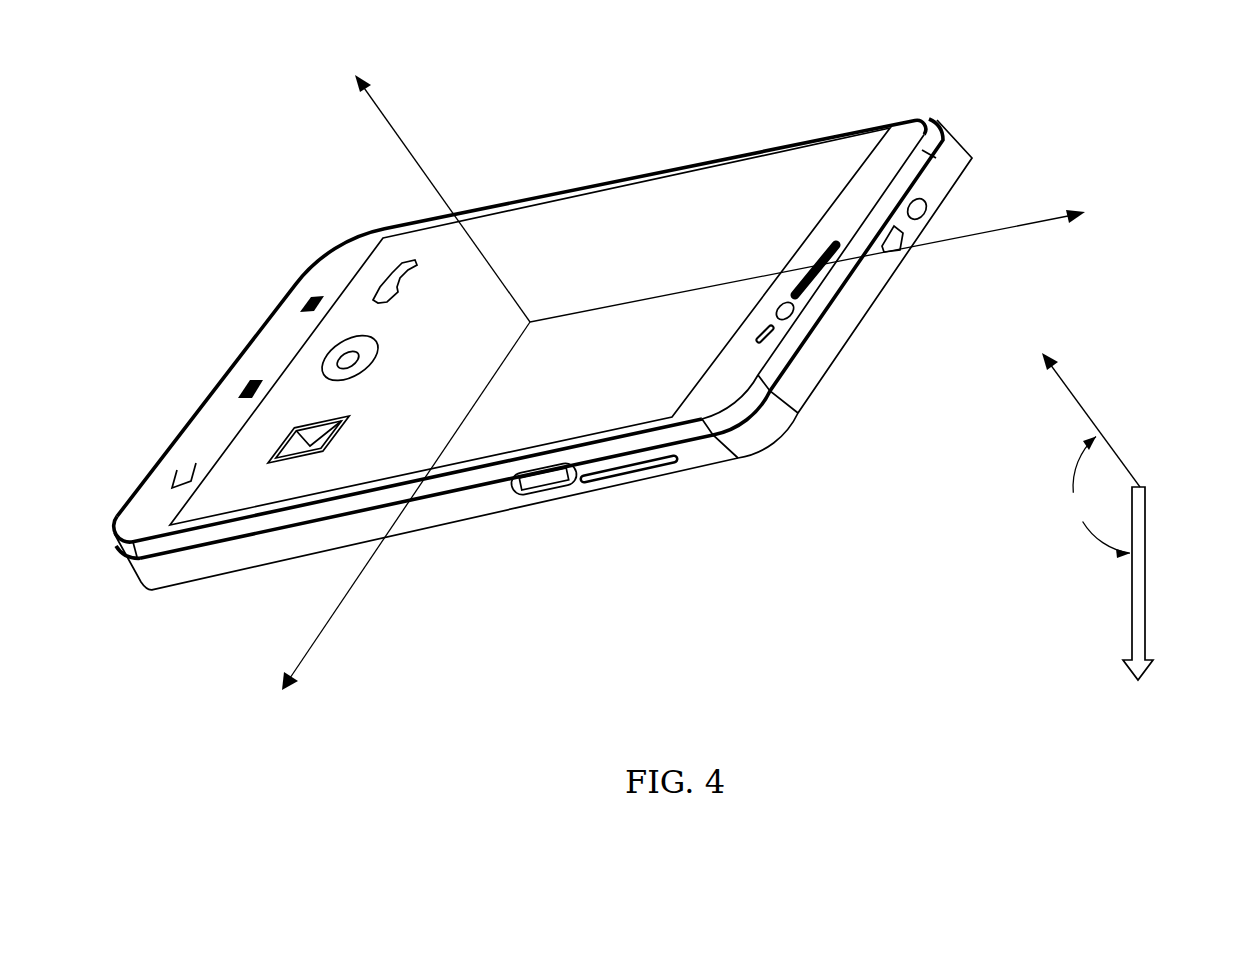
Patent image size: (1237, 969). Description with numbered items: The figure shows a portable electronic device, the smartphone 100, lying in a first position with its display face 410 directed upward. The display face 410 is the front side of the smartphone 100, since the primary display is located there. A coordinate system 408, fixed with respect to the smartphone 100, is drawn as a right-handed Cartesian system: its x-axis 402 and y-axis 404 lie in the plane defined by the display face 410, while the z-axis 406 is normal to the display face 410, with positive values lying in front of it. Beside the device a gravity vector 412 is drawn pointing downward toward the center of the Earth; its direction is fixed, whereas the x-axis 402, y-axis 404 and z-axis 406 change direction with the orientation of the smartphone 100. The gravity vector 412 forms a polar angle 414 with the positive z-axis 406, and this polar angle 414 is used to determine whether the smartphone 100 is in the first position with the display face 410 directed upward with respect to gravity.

The smartphone 100 is at (548, 338).
The x-axis 402 is at (338, 607).
The y-axis 404 is at (1030, 223).
The z-axis 406 is at (399, 138).
The coordinate system 408 is at (704, 382).
The display face 410 is at (697, 237).
The gravity vector 412 is at (1150, 664).
The polar angle θ1 414 is at (1059, 508).